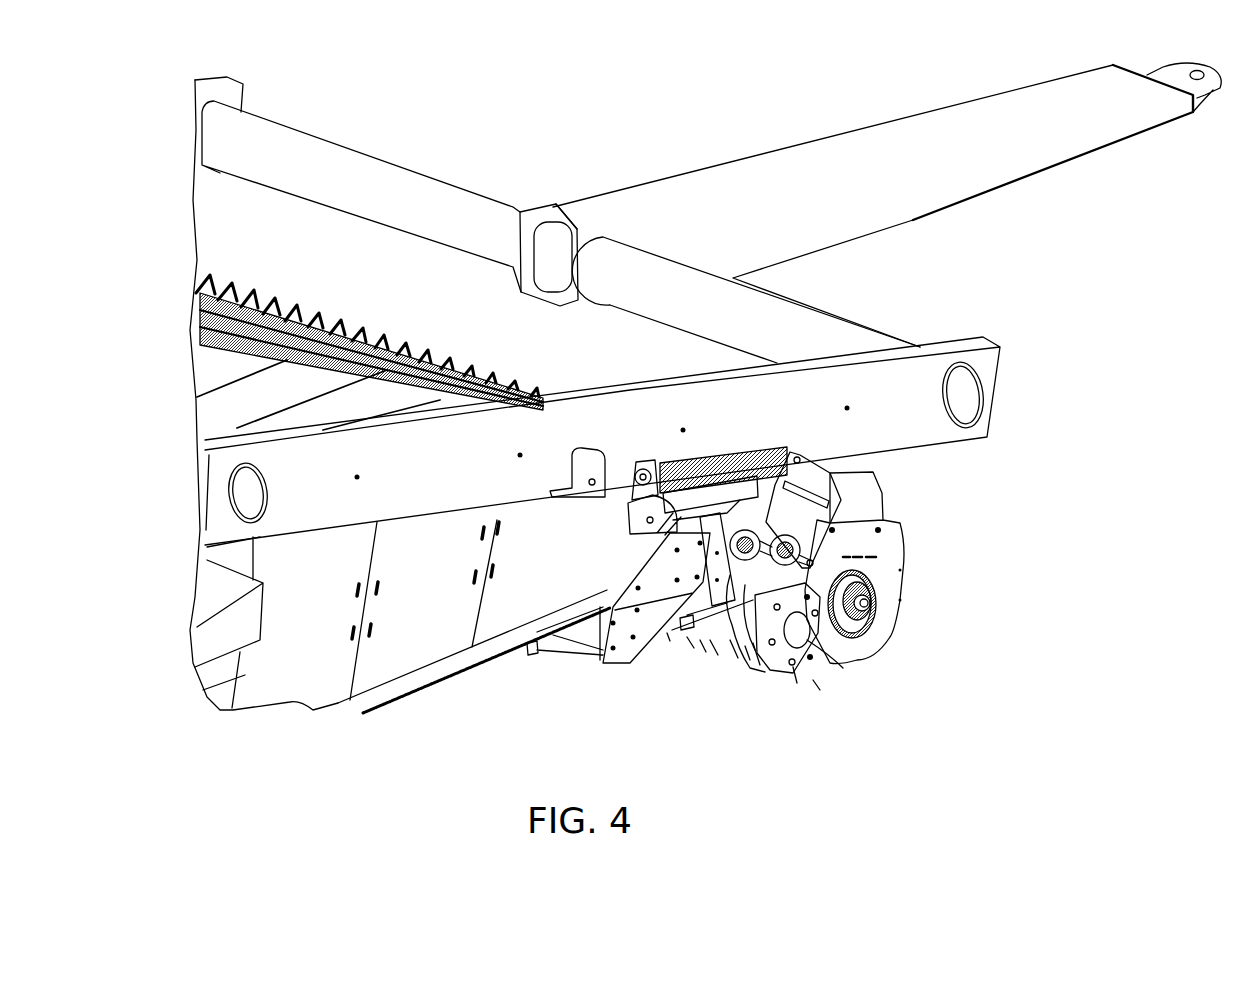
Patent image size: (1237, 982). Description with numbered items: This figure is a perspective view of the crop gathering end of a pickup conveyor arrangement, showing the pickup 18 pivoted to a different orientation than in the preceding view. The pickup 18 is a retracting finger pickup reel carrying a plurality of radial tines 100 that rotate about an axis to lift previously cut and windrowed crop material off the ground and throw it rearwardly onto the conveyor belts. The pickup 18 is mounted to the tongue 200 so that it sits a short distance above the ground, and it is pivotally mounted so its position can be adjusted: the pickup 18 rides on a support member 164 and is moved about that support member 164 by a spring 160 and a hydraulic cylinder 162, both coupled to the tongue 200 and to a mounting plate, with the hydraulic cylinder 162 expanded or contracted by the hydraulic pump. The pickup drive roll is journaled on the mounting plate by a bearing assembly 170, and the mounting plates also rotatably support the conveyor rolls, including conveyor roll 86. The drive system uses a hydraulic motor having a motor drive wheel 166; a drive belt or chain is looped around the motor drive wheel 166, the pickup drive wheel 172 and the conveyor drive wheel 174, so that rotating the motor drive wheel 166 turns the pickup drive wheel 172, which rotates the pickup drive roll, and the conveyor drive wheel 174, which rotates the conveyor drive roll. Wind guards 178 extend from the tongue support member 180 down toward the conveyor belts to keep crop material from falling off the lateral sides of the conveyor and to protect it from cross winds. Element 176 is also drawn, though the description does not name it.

The pickup 18 is at (877, 677).
The conveyor roll 86 is at (590, 637).
The radial tines 100 is at (827, 687).
The spring 160 is at (700, 456).
The hydraulic cylinder 162 is at (664, 530).
The support member 164 is at (700, 605).
The motor drive wheel 166 is at (807, 640).
The bearing assembly 170 is at (872, 622).
The pickup drive wheel 172 is at (866, 602).
The conveyor drive wheel 174 is at (719, 640).
The mounting plate 176 is at (643, 628).
The wind guards 178 is at (437, 630).
The tongue support member 180 is at (617, 413).
The tongue 200 is at (785, 163).